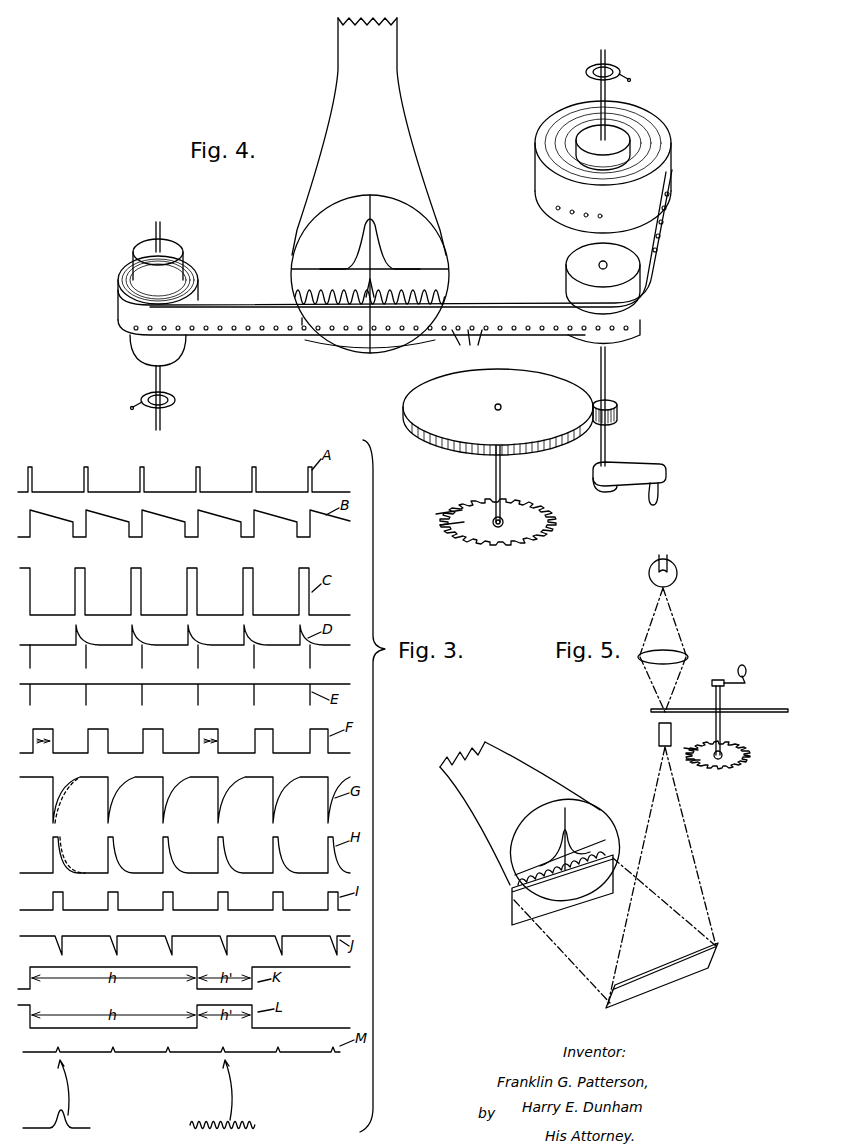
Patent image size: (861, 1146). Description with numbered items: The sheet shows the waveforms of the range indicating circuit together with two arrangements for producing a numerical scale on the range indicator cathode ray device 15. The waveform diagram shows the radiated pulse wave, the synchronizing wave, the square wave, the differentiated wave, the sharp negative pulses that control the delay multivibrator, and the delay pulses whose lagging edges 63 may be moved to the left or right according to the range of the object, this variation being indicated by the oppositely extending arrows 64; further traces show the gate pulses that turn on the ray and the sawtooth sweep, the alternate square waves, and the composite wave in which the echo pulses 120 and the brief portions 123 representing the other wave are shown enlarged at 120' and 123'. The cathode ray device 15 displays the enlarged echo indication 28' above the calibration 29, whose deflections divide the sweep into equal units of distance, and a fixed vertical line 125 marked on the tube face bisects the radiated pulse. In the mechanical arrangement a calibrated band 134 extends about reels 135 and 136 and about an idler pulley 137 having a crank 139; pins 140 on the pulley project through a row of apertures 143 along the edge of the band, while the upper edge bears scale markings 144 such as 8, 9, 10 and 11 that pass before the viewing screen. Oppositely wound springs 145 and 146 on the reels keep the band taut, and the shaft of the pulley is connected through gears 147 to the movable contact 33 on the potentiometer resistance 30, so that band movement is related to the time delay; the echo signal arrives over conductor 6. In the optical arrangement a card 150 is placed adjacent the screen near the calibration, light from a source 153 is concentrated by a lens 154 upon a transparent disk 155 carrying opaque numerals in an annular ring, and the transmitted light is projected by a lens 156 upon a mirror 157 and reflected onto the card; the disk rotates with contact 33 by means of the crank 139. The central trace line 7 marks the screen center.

In FIG. 4, the cathode ray device 15 is at (398, 124).
In FIG. 5, the cathode ray device 15 is at (547, 782).
In FIG. 4, the echo indication 28' is at (370, 244).
In FIG. 4, the calibration 29 is at (445, 292).
In FIG. 4, the calibrated band 134 is at (239, 304).
In FIG. 4, the scale markings 144 is at (168, 317).
In FIG. 4, the scale marking 9 is at (301, 314).
In FIG. 4, the scale marking 10 is at (445, 312).
In FIG. 4, the film section 11 is at (582, 309).
In FIG. 4, the apertures 143 is at (467, 345).
In FIG. 4, the fixed vertical line 125 is at (361, 352).
In FIG. 4, the reel 135 is at (147, 250).
In FIG. 4, the spring 145 is at (168, 398).
In FIG. 4, the reel 136 is at (609, 140).
In FIG. 4, the spring 146 is at (613, 68).
In FIG. 4, the pins 140 is at (640, 309).
In FIG. 4, the idler pulley 137 is at (634, 343).
In FIG. 4, the gears 147 is at (596, 428).
In FIG. 4, the crank 139 is at (658, 491).
In FIG. 5, the crank 139 is at (748, 672).
In FIG. 4, the resistance 30 is at (548, 518).
In FIG. 5, the resistance 30 is at (728, 770).
In FIG. 4, the variable contact 33 is at (497, 532).
In FIG. 5, the variable contact 33 is at (724, 751).
In FIG. 3, the lagging edges 63 is at (55, 732).
In FIG. 3, the arrows 64 is at (220, 739).
In FIG. 3, the echo pulses 120 is at (181, 1041).
In FIG. 3, the wave portions 123 is at (238, 1038).
In FIG. 3, the enlarged echo pulse 120' is at (71, 1094).
In FIG. 3, the enlarged wave portion 123' is at (233, 1094).
In FIG. 5, the light source 153 is at (677, 570).
In FIG. 5, the lens 154 is at (680, 653).
In FIG. 5, the transparent disk 155 is at (680, 708).
In FIG. 5, the lens 156 is at (658, 731).
In FIG. 5, the card 150 is at (527, 923).
In FIG. 5, the mirror 157 is at (712, 963).
In FIG. 5, the conductor 6 is at (560, 871).
In FIG. 5, the trace center line 7 is at (565, 846).
In FIG. 5, the scale marking 8 is at (563, 868).